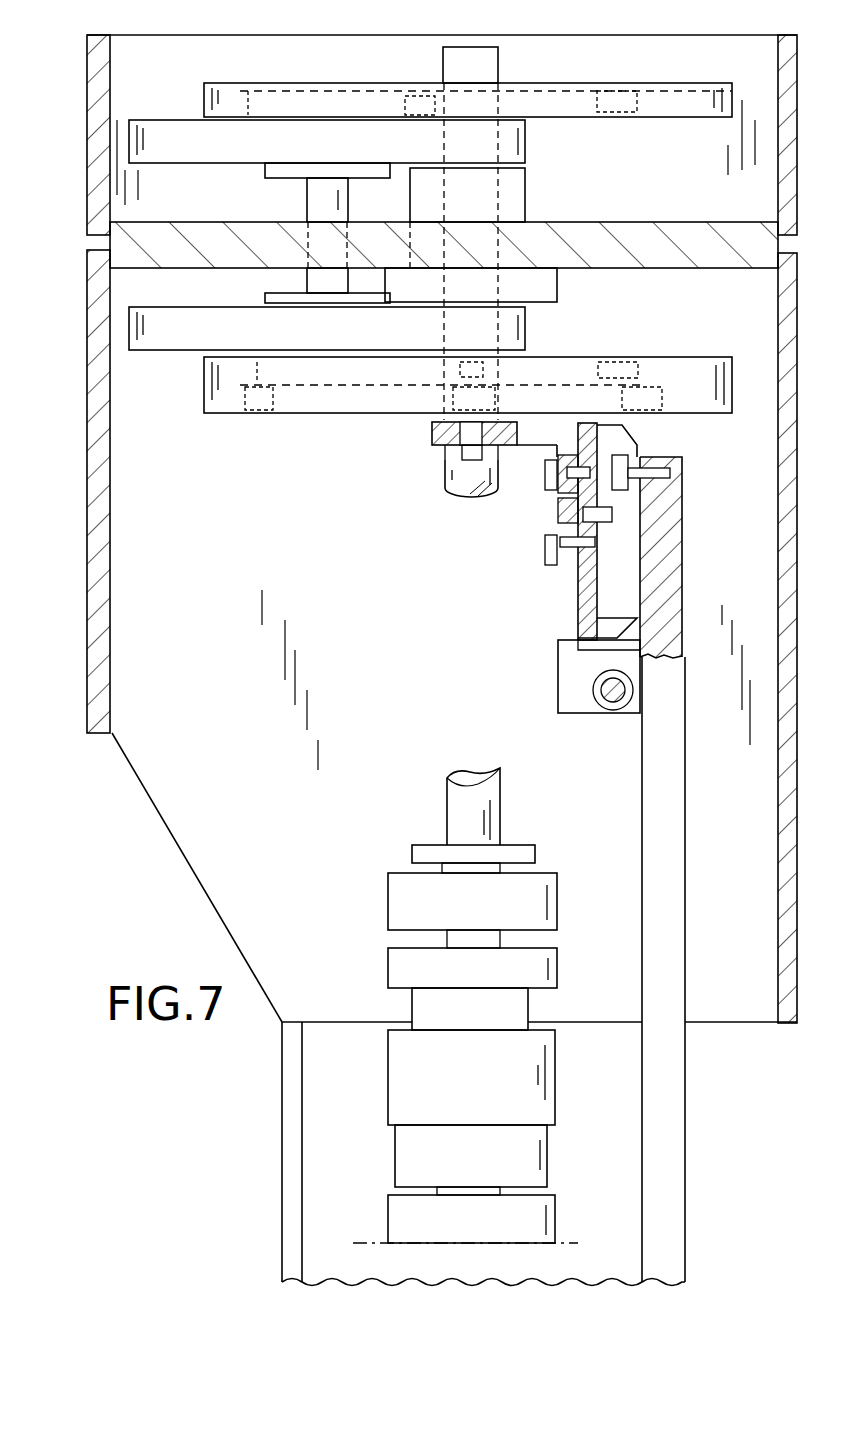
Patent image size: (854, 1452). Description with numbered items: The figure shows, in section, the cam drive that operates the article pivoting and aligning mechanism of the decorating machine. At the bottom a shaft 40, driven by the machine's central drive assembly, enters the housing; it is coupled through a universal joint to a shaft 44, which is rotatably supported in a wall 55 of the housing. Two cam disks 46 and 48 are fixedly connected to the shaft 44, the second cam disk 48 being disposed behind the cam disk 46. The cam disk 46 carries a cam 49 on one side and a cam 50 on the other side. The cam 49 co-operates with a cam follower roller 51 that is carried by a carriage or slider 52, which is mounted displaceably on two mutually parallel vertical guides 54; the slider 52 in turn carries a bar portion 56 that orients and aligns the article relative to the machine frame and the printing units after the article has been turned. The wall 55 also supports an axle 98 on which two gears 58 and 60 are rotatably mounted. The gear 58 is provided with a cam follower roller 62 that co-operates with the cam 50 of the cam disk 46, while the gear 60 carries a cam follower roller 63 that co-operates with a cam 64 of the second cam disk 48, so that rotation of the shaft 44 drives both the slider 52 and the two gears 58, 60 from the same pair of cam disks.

The shaft 40 is at (458, 800).
The shaft 44 is at (450, 483).
The cam disk 46 is at (703, 370).
The cam disk 48 is at (700, 97).
The cam 49 is at (645, 400).
The cam 50 is at (613, 370).
The cam follower roller 51 is at (427, 420).
The slider 52 is at (557, 583).
The vertical guides 54 is at (615, 557).
The wall 55 is at (603, 238).
The bar portion 56 is at (598, 693).
The gear 58 is at (165, 338).
The gear 60 is at (180, 125).
The cam follower roller 62 is at (523, 370).
The cam follower roller 63 is at (420, 100).
The cam 64 is at (613, 95).
The axle 98 is at (322, 200).